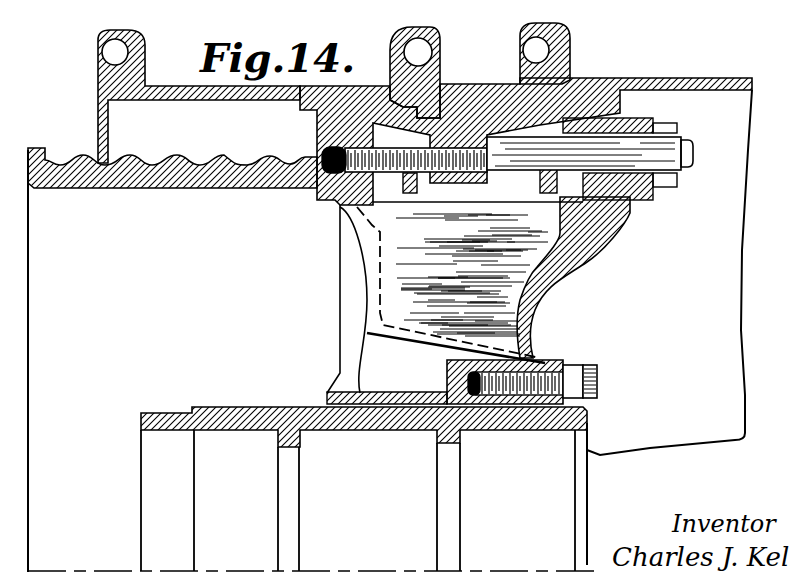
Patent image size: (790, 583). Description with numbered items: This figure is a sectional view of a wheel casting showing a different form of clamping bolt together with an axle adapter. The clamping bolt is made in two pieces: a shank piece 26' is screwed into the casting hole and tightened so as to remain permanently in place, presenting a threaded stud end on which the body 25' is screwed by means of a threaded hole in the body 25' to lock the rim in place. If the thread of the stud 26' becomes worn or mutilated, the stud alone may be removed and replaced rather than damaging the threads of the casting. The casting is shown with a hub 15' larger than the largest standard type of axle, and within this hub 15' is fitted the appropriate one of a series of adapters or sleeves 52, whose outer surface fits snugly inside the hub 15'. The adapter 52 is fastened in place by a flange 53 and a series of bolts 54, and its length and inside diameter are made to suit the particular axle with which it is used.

The body 25' is at (507, 124).
The shank piece 26' is at (522, 220).
The hub 15' is at (371, 304).
The adapter 52 is at (218, 410).
The flange 53 is at (568, 360).
The bolts 54 is at (598, 380).